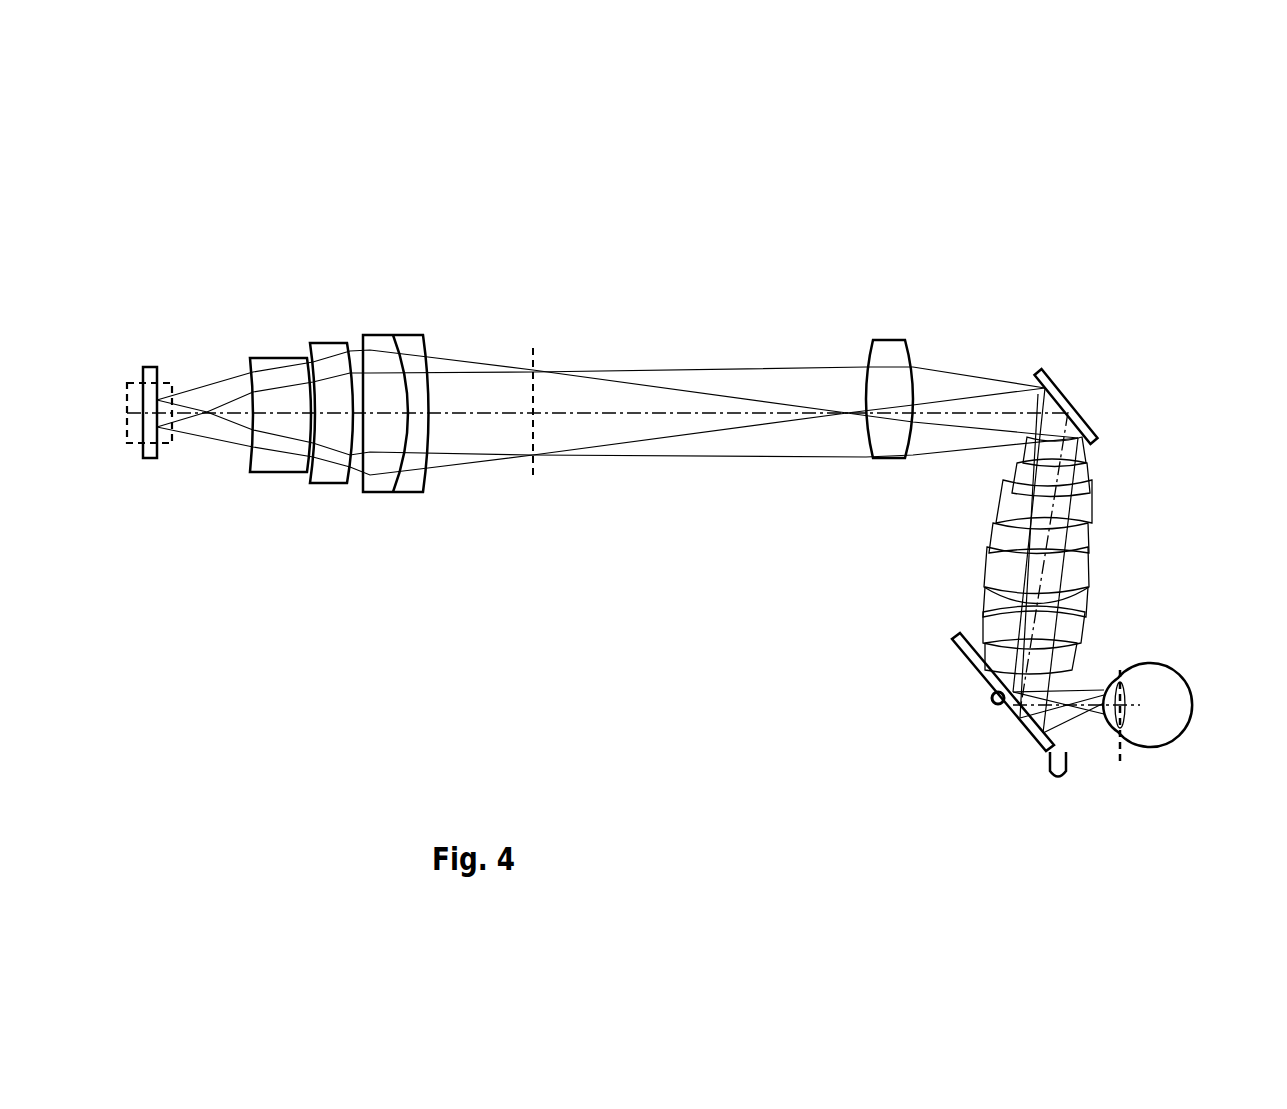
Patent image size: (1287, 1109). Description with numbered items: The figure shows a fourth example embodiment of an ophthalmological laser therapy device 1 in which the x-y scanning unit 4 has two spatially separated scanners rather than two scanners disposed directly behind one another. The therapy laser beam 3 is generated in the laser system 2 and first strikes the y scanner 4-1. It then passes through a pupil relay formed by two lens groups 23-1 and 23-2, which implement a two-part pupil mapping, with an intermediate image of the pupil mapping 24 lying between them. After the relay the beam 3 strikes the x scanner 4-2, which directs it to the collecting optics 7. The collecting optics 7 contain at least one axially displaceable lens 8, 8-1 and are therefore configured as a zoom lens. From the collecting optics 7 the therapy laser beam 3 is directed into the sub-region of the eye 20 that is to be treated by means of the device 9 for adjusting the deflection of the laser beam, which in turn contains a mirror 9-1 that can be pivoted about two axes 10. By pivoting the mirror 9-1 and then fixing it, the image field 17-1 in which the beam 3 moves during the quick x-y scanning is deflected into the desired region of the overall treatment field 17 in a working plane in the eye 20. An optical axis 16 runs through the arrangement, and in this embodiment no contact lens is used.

The ophthalmological laser therapy device 1 is at (837, 242).
The laser system 2 is at (118, 372).
The therapy laser beam 3 is at (203, 374).
The x-y scanning unit 4 is at (167, 368).
The y scanner 4-1 is at (158, 346).
The x scanner 4-2 is at (1073, 380).
The collecting optics 7 is at (1157, 447).
The axially displaceable lens 8 is at (973, 555).
The axially displaceable lens 8-1 is at (976, 574).
The laser beam deflection device 9 is at (925, 692).
The pivoting mirror 9-1 is at (953, 665).
The pivot axes 10 is at (1030, 762).
The optical axis 16 is at (587, 426).
The treatment field 17 is at (1139, 738).
The image field 17-1 is at (1135, 802).
The eye 20 is at (1185, 748).
The first lens group 23-1 is at (338, 305).
The second lens group 23-2 is at (899, 322).
The intermediate image of the pupil mapping 24 is at (538, 344).